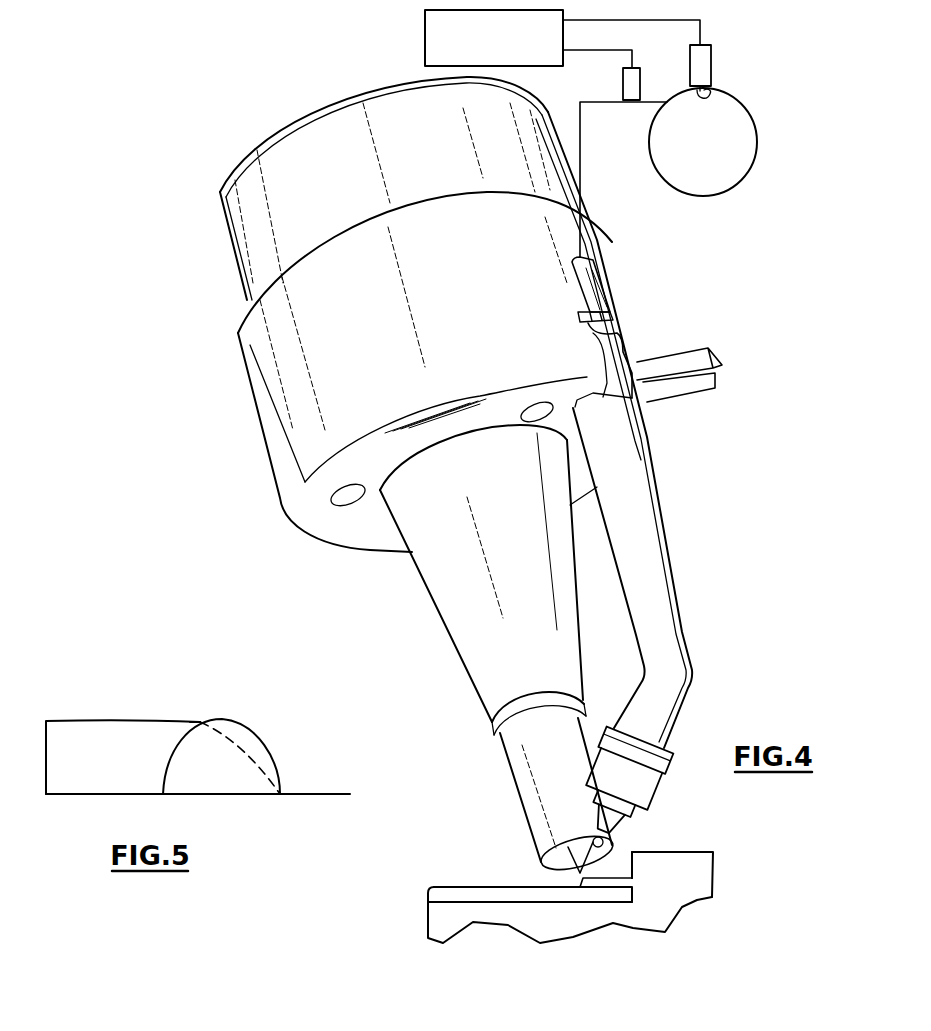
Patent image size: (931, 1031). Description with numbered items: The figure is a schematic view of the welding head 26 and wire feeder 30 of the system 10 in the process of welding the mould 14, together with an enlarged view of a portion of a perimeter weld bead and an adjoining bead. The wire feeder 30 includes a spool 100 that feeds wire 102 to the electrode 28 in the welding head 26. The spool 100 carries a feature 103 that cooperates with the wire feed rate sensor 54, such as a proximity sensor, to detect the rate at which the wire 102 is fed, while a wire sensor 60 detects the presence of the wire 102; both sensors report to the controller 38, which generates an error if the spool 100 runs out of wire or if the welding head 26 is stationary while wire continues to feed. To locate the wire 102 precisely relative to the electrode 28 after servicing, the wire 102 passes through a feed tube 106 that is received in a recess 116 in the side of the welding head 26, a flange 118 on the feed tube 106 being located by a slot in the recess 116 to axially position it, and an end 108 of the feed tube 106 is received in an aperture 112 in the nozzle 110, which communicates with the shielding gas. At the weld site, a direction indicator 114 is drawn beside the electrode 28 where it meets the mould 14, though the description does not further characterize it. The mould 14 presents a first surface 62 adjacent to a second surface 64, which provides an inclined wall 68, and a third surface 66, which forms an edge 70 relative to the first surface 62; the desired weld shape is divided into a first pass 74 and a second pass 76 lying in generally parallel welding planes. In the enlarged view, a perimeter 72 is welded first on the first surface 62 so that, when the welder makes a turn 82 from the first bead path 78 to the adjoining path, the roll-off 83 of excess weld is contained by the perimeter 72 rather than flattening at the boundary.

In FIG. 4, the system 10 is at (533, 463).
In FIG. 4, the mould 14 is at (559, 885).
In FIG. 4, the welding head 26 is at (606, 243).
In FIG. 4, the electrode 28 is at (564, 844).
In FIG. 4, the wire feeder 30 is at (669, 575).
In FIG. 4, the controller 38 is at (425, 36).
In FIG. 4, the wire feed rate sensor 54 is at (711, 66).
In FIG. 4, the wire sensor 60 is at (623, 82).
In FIG. 4, the first surface 62 is at (475, 900).
In FIG. 5, the first surface 62 is at (291, 794).
In FIG. 4, the second surface 64 is at (624, 857).
In FIG. 4, the third surface 66 is at (427, 908).
In FIG. 4, the inclined wall 68 is at (636, 866).
In FIG. 4, the edge 70 is at (428, 901).
In FIG. 5, the perimeter 72 is at (243, 730).
In FIG. 4, the first pass 74 is at (526, 897).
In FIG. 4, the second pass 76 is at (607, 881).
In FIG. 5, the first bead path 78 is at (70, 730).
In FIG. 5, the turn 82 is at (195, 717).
In FIG. 5, the roll-off 83 is at (253, 757).
In FIG. 4, the spool 100 is at (744, 180).
In FIG. 4, the wire 102 is at (598, 103).
In FIG. 4, the feature 103 is at (710, 102).
In FIG. 4, the feed tube 106 is at (651, 491).
In FIG. 4, the end 108 is at (617, 828).
In FIG. 4, the nozzle 110 is at (514, 775).
In FIG. 4, the aperture 112 is at (600, 822).
In FIG. 4, the travel direction arrow 114 is at (547, 857).
In FIG. 4, the recess 116 is at (618, 353).
In FIG. 4, the flange 118 is at (611, 316).